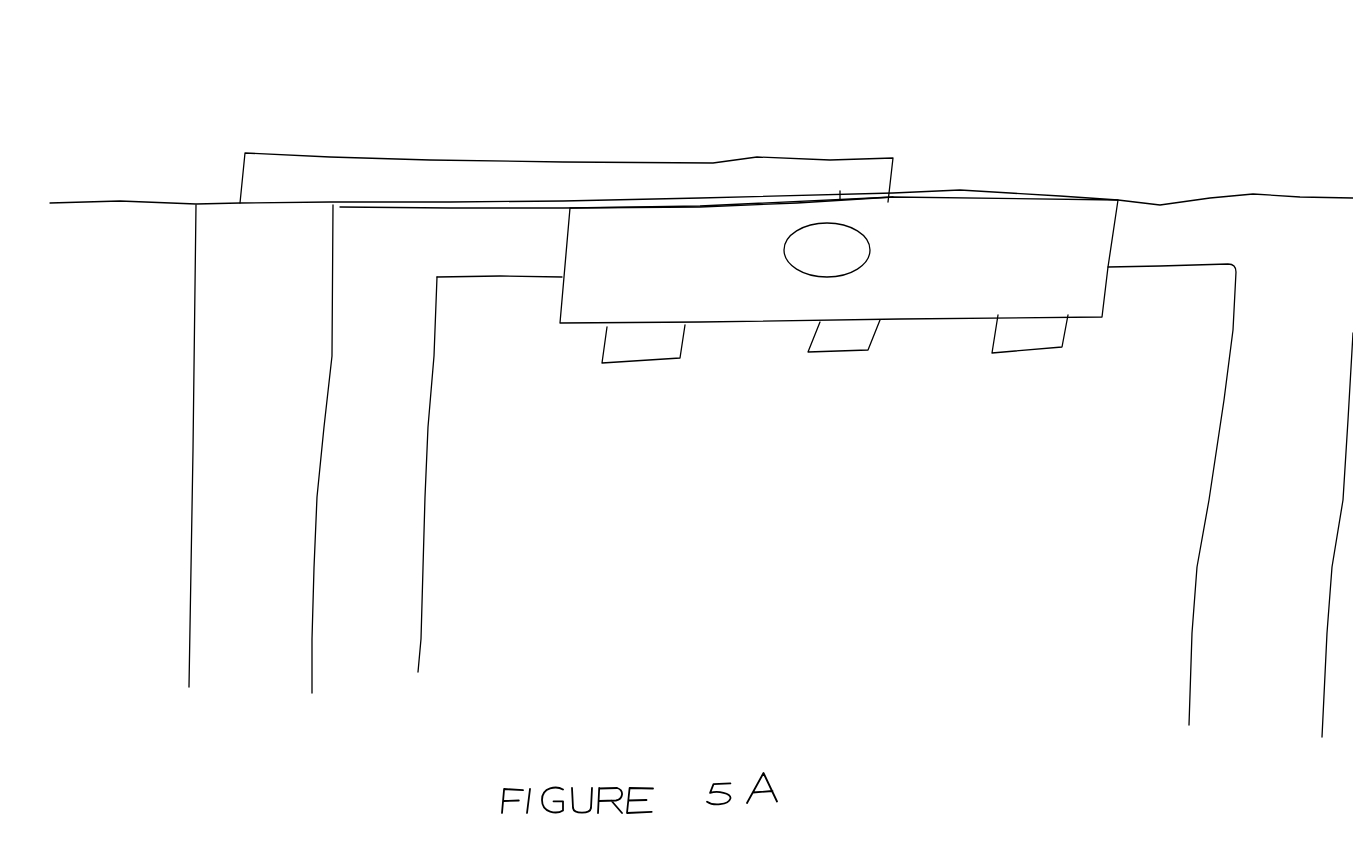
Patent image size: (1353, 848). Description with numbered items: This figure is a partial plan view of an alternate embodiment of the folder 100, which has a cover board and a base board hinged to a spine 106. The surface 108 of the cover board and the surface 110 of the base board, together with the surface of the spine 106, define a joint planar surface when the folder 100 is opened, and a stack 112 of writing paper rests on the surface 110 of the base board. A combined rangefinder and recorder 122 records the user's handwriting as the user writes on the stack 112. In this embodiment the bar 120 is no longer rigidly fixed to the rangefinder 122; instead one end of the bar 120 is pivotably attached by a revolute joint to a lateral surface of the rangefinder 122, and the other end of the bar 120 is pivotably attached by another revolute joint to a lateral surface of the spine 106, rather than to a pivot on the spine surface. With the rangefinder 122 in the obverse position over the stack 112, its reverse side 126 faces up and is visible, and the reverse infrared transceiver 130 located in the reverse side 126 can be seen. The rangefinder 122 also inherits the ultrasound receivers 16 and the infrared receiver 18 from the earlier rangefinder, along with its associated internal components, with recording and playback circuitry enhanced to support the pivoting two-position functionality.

The folder 100 is at (1282, 45).
The spine 106 is at (222, 310).
The surface of cover board 108 is at (104, 285).
The surface of base board 110 is at (342, 433).
The stack of writing paper 112 is at (672, 463).
The bar 120 is at (480, 197).
The combined rangefinder and recorder 122 is at (960, 187).
The reverse side 126 is at (712, 262).
The reverse infrared transceiver 130 is at (842, 242).
The ultrasound receivers 16 is at (1045, 339).
The infrared receiver 18 is at (860, 347).